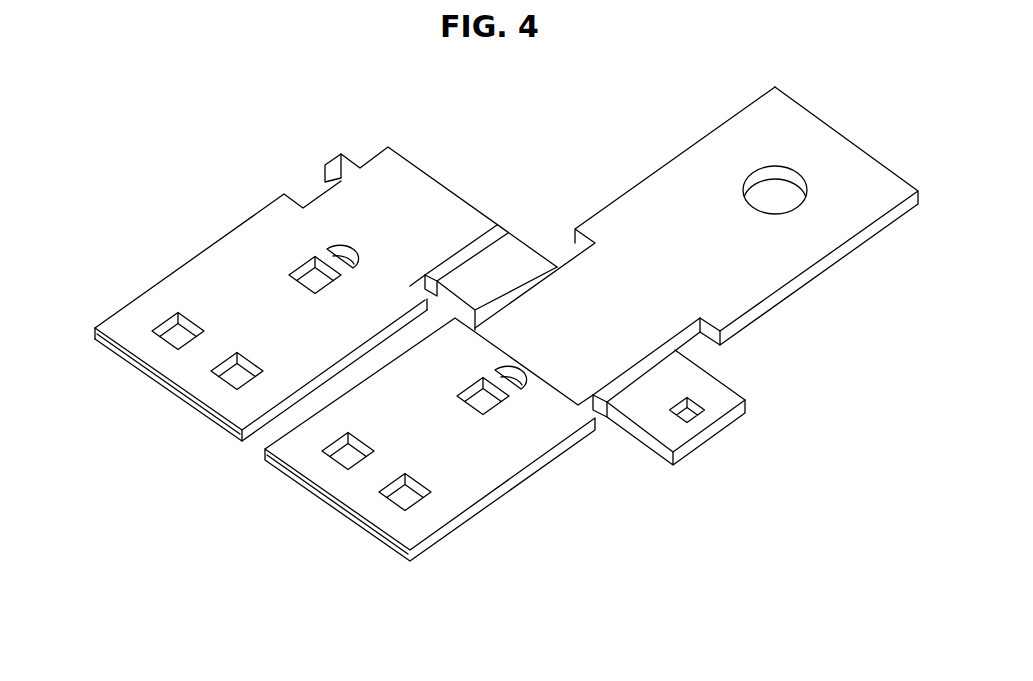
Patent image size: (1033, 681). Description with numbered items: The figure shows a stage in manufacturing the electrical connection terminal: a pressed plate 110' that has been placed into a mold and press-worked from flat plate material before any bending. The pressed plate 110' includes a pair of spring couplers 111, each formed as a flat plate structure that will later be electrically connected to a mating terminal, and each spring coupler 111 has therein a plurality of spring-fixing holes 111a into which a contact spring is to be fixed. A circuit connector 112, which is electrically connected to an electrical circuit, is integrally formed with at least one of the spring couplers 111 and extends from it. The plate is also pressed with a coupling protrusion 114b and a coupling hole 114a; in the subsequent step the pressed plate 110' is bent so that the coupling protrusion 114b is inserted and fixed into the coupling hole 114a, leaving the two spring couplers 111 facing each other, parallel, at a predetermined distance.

The pressed plate 110' is at (488, 316).
The spring coupler 111 is at (143, 294).
The spring-fixing hole 111a is at (180, 339).
The circuit connector 112 is at (818, 152).
The coupling hole 114a is at (688, 414).
The coupling protrusion 114b is at (343, 163).